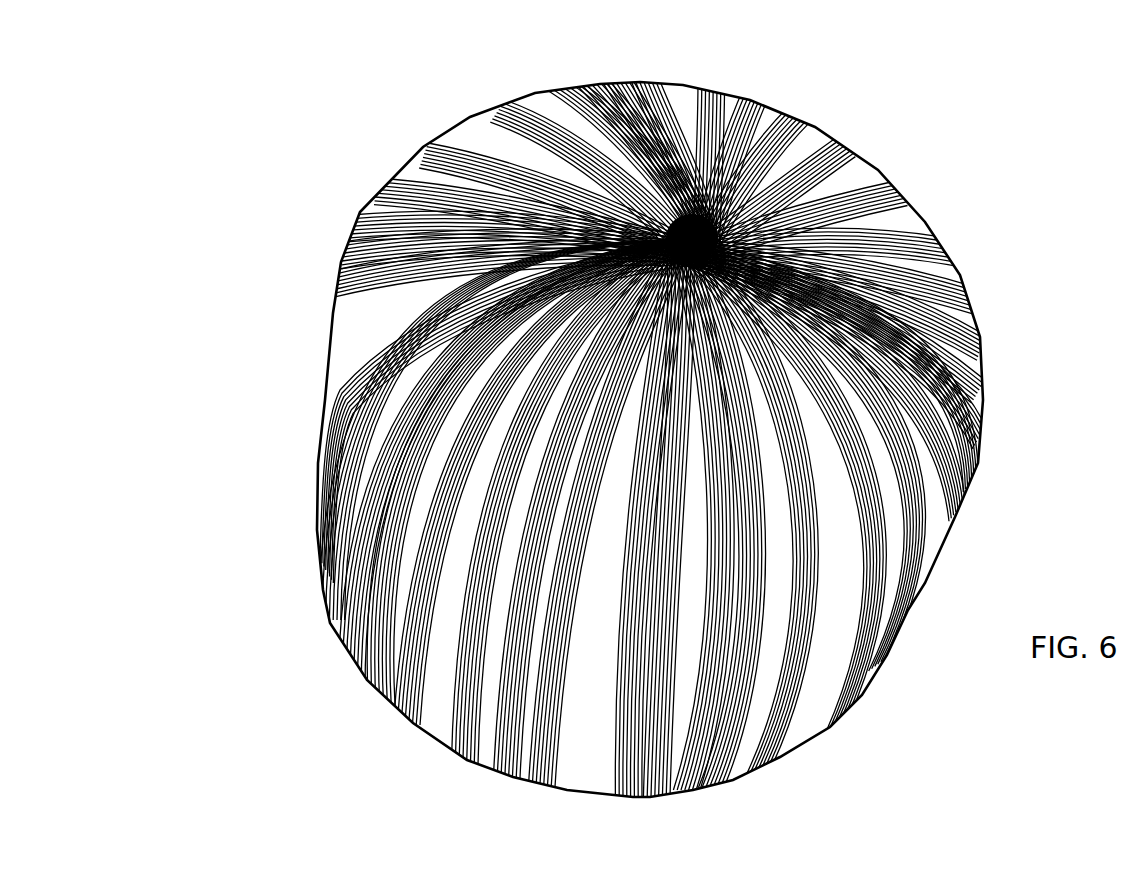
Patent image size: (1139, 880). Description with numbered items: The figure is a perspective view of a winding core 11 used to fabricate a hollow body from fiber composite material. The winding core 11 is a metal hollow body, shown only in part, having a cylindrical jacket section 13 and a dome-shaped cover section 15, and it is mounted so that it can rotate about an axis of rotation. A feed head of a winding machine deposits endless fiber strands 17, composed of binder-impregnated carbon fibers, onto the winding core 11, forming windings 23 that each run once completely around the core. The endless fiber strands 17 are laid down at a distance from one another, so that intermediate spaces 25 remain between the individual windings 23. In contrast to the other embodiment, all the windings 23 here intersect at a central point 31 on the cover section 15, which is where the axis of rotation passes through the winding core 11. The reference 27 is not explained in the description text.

The winding core 11 is at (406, 149).
The cylindrical jacket section 13 is at (832, 638).
The dome-shaped cover section 15 is at (897, 205).
The endless fiber strands 17 is at (940, 504).
The windings 23 is at (392, 341).
The intermediate spaces 25 is at (435, 690).
The fiber bundle 27 is at (390, 536).
The central point 31 is at (733, 125).